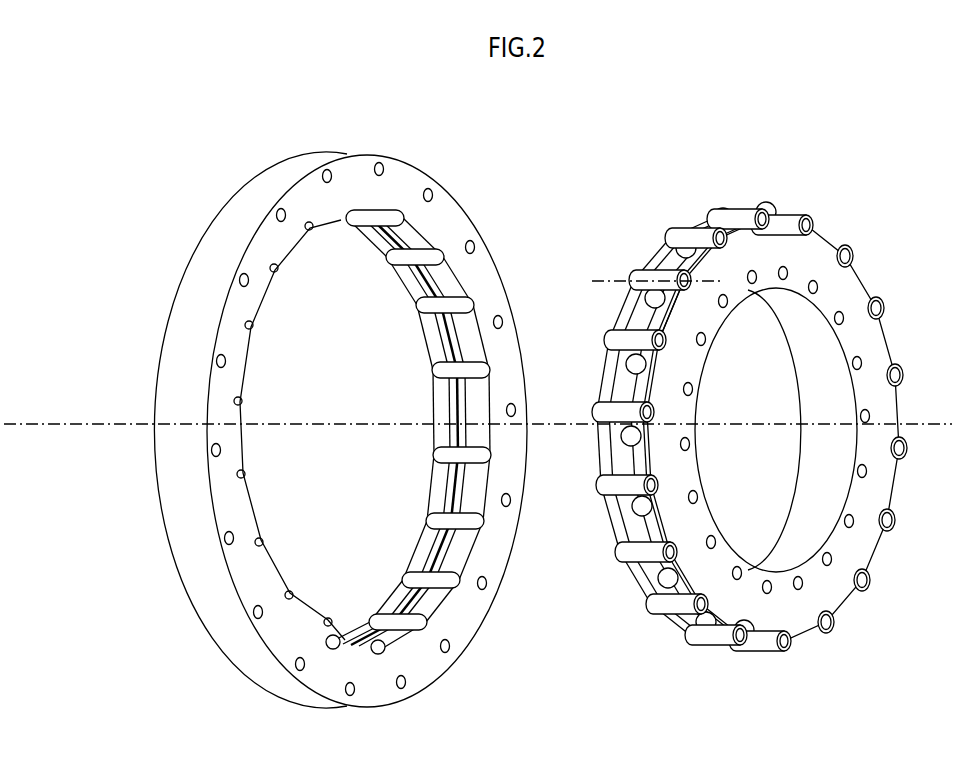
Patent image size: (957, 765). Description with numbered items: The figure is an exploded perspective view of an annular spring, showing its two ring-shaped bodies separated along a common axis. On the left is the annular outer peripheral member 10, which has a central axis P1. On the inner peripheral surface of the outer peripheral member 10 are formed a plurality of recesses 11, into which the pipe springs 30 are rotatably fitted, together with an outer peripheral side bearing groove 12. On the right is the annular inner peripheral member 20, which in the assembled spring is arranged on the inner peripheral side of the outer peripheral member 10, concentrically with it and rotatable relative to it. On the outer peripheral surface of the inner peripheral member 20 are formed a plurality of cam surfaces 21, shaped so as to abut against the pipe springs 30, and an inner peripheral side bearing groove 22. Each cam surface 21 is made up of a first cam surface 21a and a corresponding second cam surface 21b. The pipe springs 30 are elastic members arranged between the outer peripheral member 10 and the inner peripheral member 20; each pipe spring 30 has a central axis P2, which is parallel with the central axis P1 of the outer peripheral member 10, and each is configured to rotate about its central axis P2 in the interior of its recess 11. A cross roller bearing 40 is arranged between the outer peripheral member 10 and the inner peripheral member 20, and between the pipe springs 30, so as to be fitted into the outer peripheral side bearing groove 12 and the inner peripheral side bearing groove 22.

The outer peripheral member 10 is at (474, 221).
The recesses 11 is at (443, 432).
The outer peripheral side bearing groove 12 is at (463, 357).
The inner peripheral member 20 is at (791, 430).
The cam surfaces 21 is at (781, 336).
The first cam surface 21a is at (710, 270).
The second cam surface 21b is at (686, 298).
The inner peripheral side bearing groove 22 is at (643, 389).
The pipe springs 30 is at (632, 283).
The cross roller bearing 40 is at (683, 250).
The central axis P1 is at (72, 423).
The central axis P2 is at (603, 281).